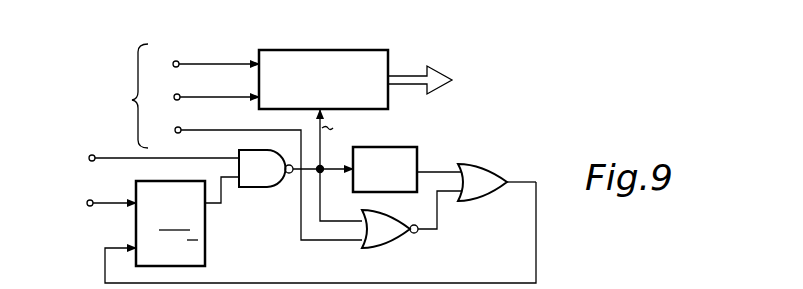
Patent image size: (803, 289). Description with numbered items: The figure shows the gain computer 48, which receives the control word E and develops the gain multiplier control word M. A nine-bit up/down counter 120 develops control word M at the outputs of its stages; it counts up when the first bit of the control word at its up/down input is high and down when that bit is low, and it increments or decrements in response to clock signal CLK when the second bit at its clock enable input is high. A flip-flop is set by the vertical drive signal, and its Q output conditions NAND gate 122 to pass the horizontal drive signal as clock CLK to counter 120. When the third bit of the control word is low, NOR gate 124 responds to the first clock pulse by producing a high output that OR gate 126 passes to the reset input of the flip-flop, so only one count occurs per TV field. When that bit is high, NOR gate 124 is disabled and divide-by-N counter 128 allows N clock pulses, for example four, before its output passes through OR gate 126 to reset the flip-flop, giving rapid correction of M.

The gain computer 48 is at (497, 104).
The up/down counter 120 is at (366, 50).
The NAND gate 122 is at (271, 188).
The NOR gate 124 is at (406, 238).
The OR gate 126 is at (494, 172).
The divide-by-N counter 128 is at (413, 147).